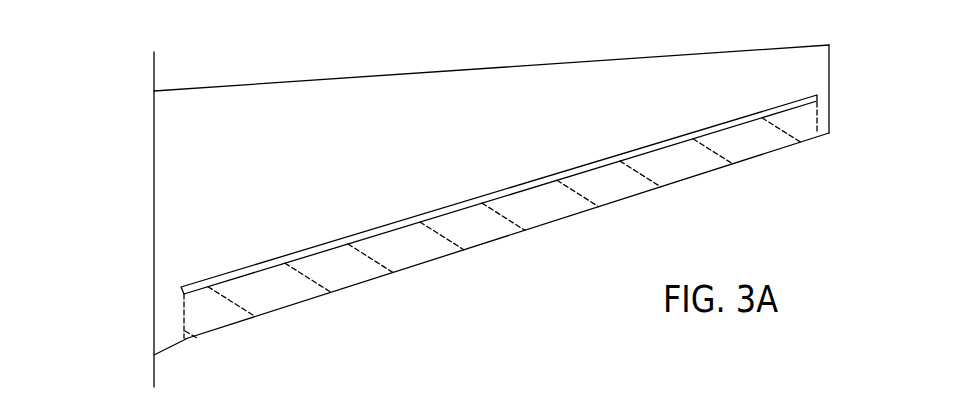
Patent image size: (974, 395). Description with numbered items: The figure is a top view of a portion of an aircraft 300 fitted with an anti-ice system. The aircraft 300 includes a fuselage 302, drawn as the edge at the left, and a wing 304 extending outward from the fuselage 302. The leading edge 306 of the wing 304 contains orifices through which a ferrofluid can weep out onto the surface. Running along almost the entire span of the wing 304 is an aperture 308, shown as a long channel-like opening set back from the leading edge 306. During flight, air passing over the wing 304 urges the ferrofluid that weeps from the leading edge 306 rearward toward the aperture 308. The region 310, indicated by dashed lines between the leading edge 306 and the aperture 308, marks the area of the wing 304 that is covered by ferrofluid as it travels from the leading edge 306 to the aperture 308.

The aircraft 300 is at (845, 102).
The fuselage 302 is at (154, 191).
The wing 304 is at (334, 88).
The leading edge 306 is at (303, 308).
The aperture 308 is at (408, 221).
The region 310 is at (620, 173).